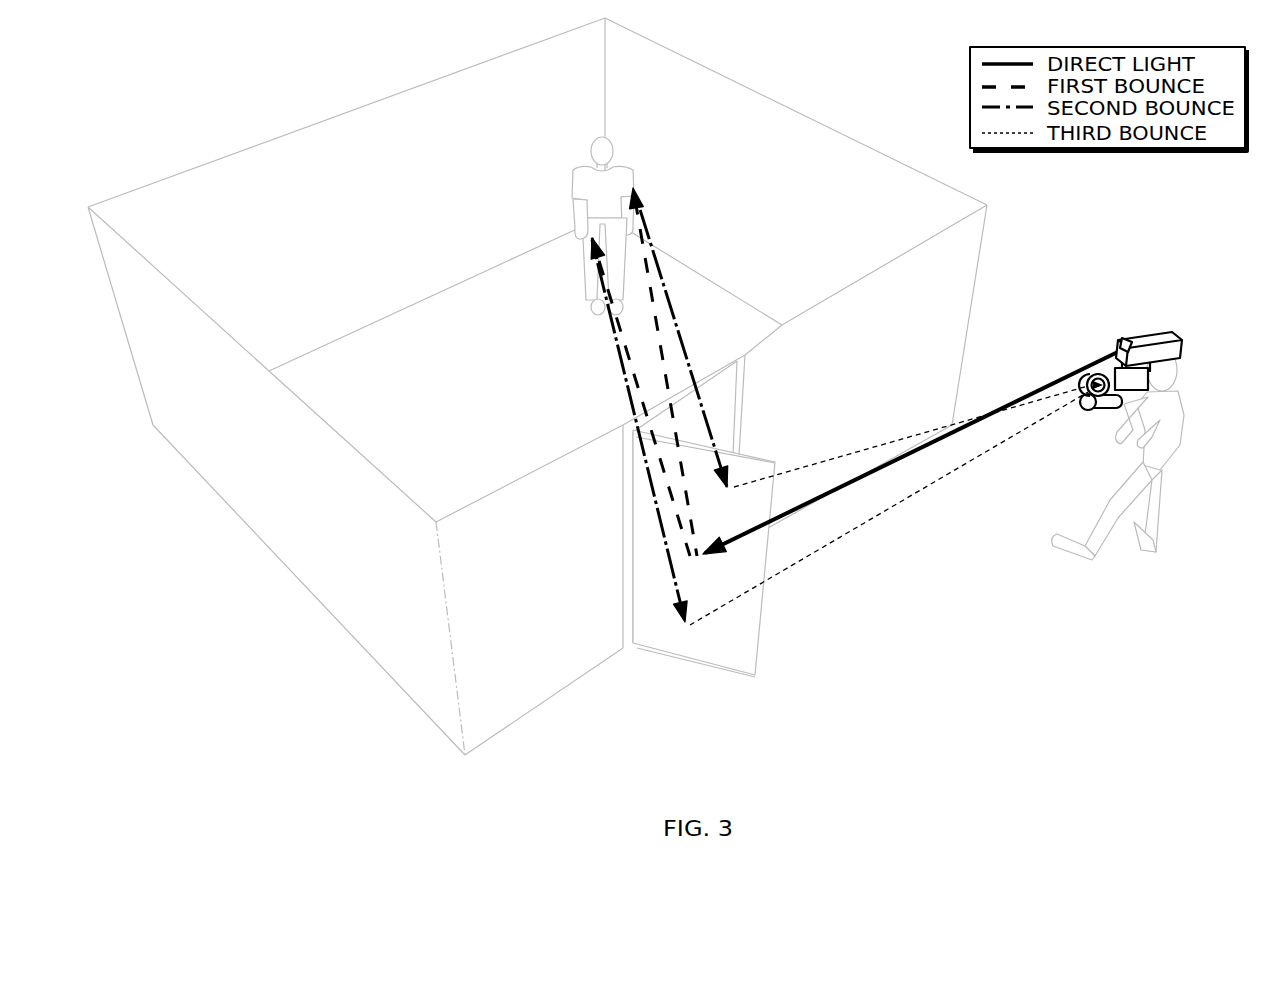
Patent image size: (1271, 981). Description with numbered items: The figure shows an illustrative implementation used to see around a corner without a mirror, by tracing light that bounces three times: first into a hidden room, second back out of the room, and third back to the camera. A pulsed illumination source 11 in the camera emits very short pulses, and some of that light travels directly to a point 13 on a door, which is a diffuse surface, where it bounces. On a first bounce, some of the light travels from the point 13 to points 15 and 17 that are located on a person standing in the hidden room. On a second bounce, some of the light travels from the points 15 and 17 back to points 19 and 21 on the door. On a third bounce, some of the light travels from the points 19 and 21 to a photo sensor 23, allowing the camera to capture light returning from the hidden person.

The pulsed illumination source 11 is at (1120, 342).
The point on a door 13 is at (694, 557).
The point on a person 15 is at (608, 226).
The point on a person 17 is at (588, 237).
The point on the door 19 is at (690, 625).
The point on the door 21 is at (729, 487).
The photo sensor 23 is at (1090, 381).